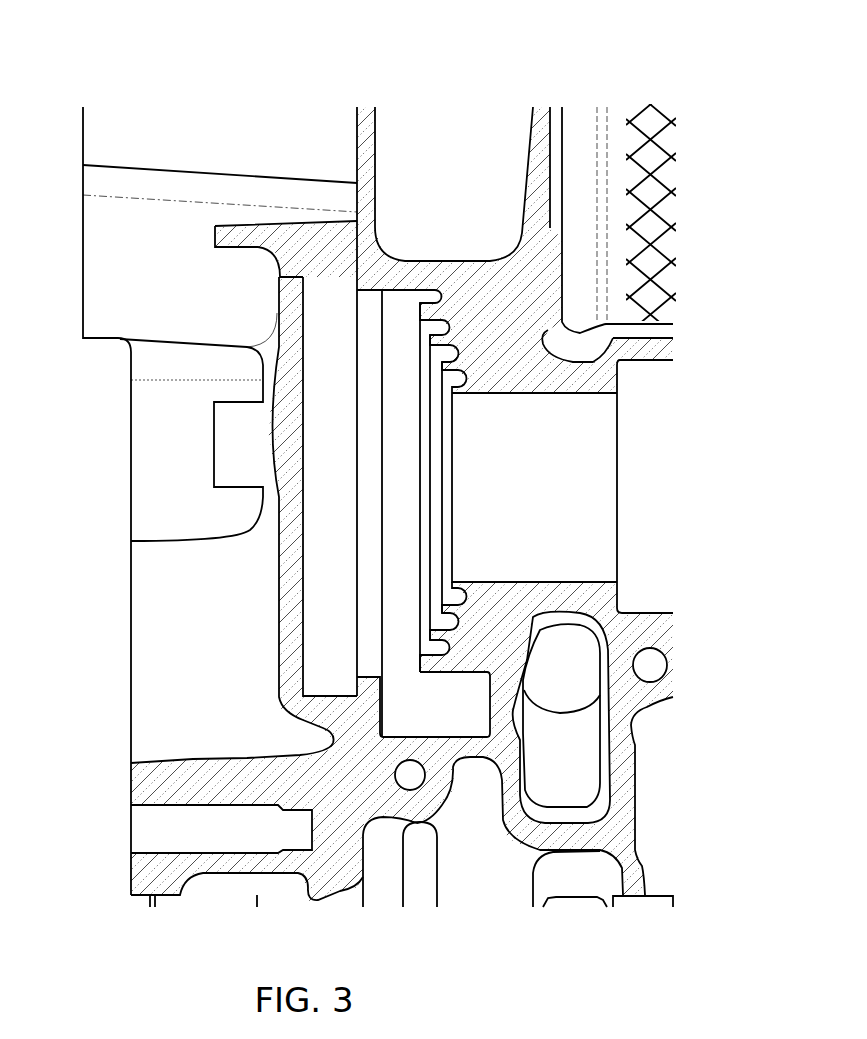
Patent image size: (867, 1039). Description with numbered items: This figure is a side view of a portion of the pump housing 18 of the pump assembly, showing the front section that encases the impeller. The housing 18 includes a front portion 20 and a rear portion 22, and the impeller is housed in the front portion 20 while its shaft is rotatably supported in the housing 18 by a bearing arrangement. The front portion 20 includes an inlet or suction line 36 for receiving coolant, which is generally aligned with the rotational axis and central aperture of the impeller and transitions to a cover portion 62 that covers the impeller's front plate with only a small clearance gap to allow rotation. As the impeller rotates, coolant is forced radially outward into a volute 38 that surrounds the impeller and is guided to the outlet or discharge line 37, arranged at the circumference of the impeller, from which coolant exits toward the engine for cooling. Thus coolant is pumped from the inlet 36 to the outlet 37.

The pump housing 18 is at (652, 623).
The front portion 20 is at (497, 392).
The rear portion 22 is at (324, 268).
The inlet or suction line 36 is at (573, 420).
The outlet or discharge line 37 is at (451, 143).
The volute 38 is at (390, 754).
The cover portion 62 is at (472, 622).